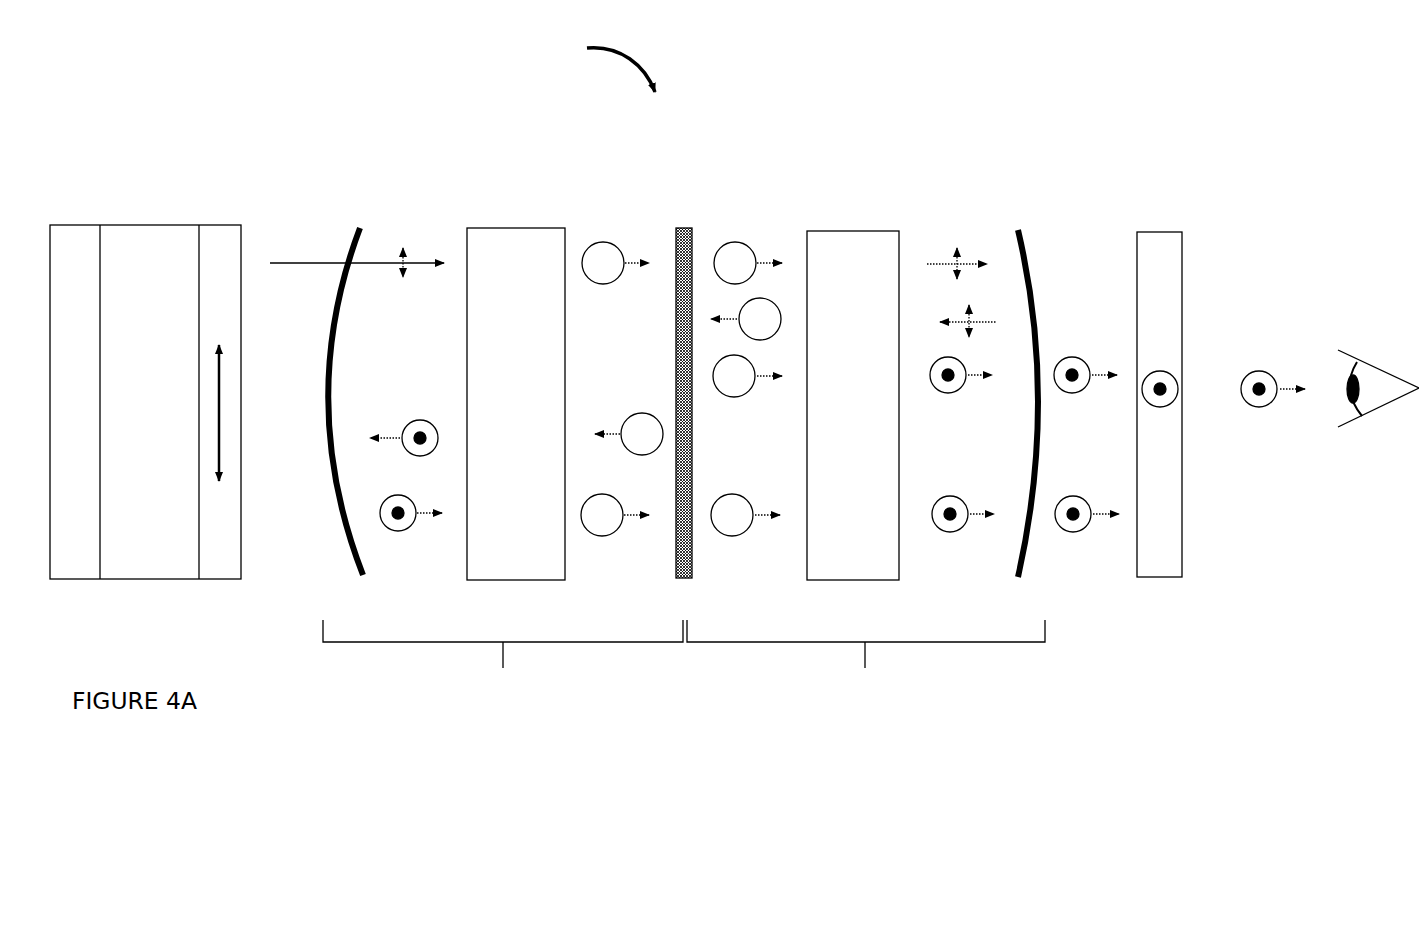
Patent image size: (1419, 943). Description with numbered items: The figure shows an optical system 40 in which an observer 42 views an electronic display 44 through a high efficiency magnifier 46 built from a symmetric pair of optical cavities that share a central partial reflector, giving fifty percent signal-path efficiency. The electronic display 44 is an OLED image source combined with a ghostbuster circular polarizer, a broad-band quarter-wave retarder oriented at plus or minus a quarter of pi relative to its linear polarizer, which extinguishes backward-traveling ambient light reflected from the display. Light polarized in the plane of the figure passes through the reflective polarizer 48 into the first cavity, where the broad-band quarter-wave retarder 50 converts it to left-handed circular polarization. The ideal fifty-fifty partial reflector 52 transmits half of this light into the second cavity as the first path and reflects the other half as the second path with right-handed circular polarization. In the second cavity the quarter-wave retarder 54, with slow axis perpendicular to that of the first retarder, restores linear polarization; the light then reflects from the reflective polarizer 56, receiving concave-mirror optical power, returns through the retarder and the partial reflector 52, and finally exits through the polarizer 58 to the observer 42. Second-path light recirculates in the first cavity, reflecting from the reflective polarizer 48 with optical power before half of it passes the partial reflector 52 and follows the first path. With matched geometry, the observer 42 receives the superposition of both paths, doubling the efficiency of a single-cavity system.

The optical system 40 is at (734, 372).
The observer 42 is at (1343, 350).
The electronic display 44 is at (141, 225).
The high efficiency magnifier 46 is at (600, 64).
The reflective polarizer 48 is at (357, 229).
The broad-band quarter-wave retarder 50 is at (509, 228).
The 50:50 partial reflector 52 is at (683, 228).
The quarter-wave retarder 54 is at (846, 231).
The reflective polarizer 56 is at (1019, 230).
The polarizer 58 is at (1155, 232).